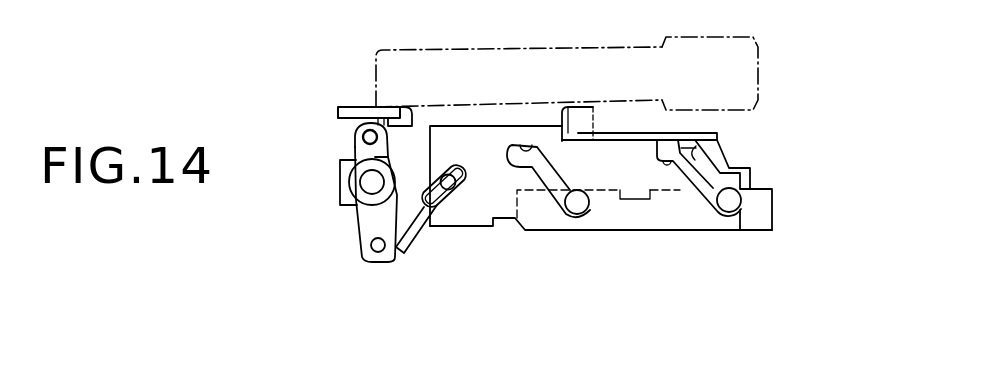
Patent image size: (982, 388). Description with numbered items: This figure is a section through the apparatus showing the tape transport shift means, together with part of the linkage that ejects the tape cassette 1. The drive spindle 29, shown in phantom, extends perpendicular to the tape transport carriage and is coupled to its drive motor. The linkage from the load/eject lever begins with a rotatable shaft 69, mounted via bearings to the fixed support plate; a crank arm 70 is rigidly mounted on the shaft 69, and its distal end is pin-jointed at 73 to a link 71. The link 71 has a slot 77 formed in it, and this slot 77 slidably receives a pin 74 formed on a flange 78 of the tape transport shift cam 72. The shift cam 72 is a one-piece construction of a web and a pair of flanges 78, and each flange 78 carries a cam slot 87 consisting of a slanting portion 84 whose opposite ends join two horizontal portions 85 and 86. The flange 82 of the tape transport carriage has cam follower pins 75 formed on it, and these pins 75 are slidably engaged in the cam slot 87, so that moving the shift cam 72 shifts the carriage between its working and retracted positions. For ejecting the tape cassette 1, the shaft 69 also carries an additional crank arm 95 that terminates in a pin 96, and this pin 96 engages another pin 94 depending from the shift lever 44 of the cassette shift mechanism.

The tape cassette 1 is at (757, 80).
The drive spindle 29 is at (593, 104).
The shift lever 44 is at (350, 106).
The pin 94 is at (411, 106).
The flange 78 is at (476, 133).
The cam slot 87 is at (535, 145).
The slanting portion 84 is at (709, 146).
The horizontal portion 85 is at (745, 191).
The horizontal portion 86 is at (671, 162).
The flange 82 is at (760, 219).
The cam follower pin 75 is at (595, 213).
The tape transport shift cam 72 is at (523, 230).
The pin 96 is at (358, 133).
The crank arm 95 is at (359, 154).
The shaft 69 is at (370, 181).
The crank arm 70 is at (360, 220).
The pin joint 73 is at (360, 249).
The link 71 is at (408, 245).
The pin 74 is at (442, 205).
The slot 77 is at (437, 204).